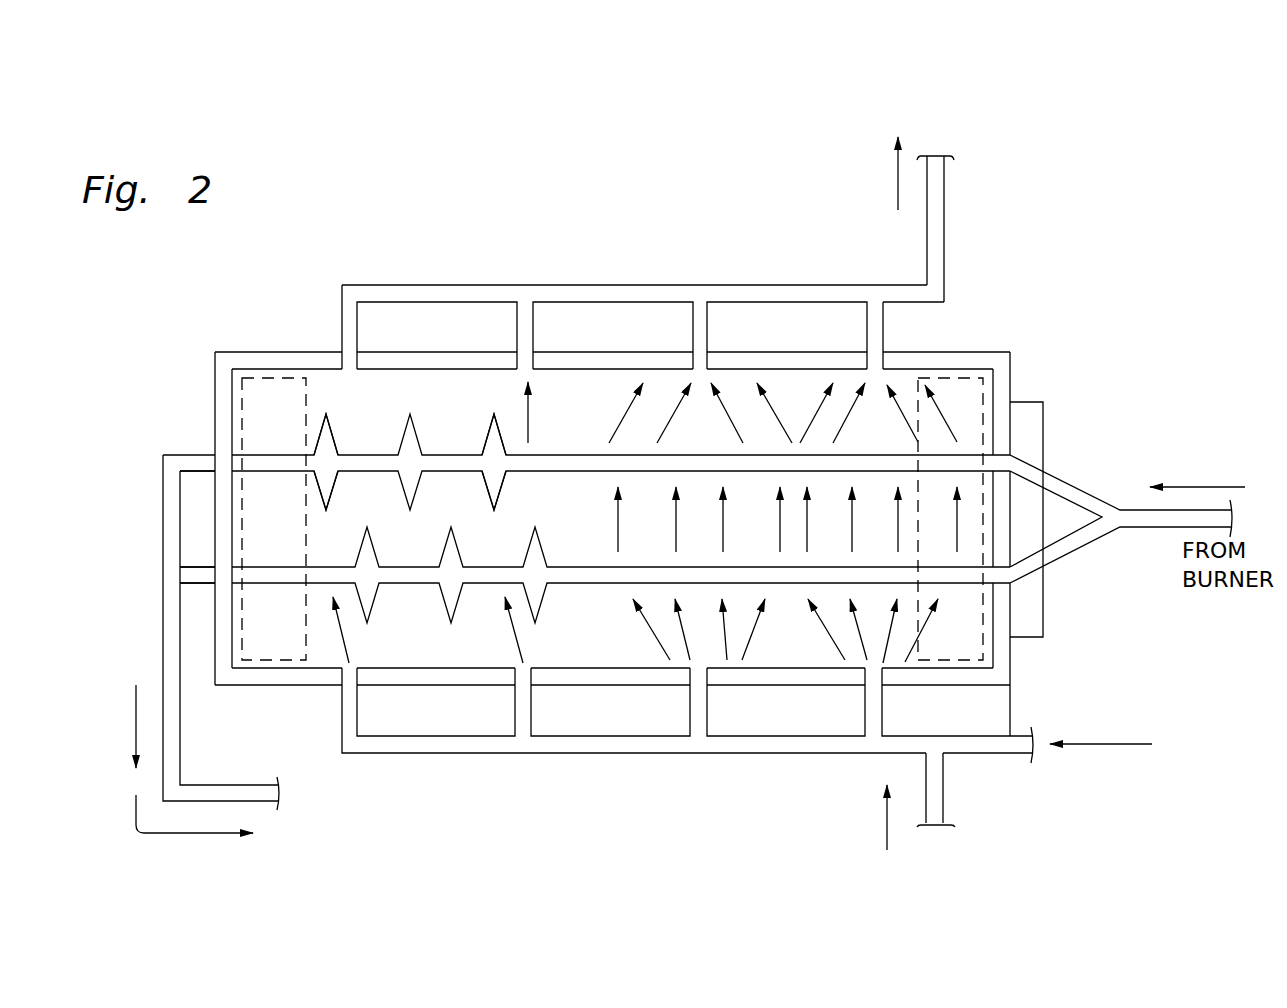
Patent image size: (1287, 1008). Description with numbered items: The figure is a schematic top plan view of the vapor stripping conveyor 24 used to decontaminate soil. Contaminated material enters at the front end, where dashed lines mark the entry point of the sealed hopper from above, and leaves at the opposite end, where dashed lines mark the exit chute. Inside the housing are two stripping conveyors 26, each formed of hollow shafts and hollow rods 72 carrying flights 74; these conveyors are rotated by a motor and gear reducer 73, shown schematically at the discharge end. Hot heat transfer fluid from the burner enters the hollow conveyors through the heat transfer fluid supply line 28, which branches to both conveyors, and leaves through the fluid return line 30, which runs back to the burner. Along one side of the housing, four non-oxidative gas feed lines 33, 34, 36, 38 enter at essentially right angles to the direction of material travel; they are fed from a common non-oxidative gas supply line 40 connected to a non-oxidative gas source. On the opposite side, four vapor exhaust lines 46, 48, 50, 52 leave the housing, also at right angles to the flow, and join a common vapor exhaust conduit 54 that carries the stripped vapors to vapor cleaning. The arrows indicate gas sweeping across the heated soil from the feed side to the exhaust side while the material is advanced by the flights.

The vapor stripping conveyor 24 is at (973, 323).
The stripping conveyor 26 is at (460, 473).
The heat transfer fluid supply line 28 is at (1085, 527).
The fluid return line 30 is at (163, 627).
The non-oxidative gas feed line 33 is at (357, 703).
The non-oxidative gas feed line 34 is at (531, 712).
The non-oxidative gas feed line 36 is at (707, 710).
The non-oxidative gas feed line 38 is at (882, 714).
The non-oxidative gas supply line 40 is at (783, 753).
The vapor exhaust line 46 is at (342, 325).
The vapor exhaust line 48 is at (518, 330).
The vapor exhaust line 50 is at (693, 330).
The vapor exhaust line 52 is at (867, 330).
The vapor exhaust conduit 54 is at (945, 208).
The hollow shafts and hollow rods 72 is at (355, 473).
The motor and gear reducer 73 is at (1030, 390).
The flights 74 is at (500, 487).